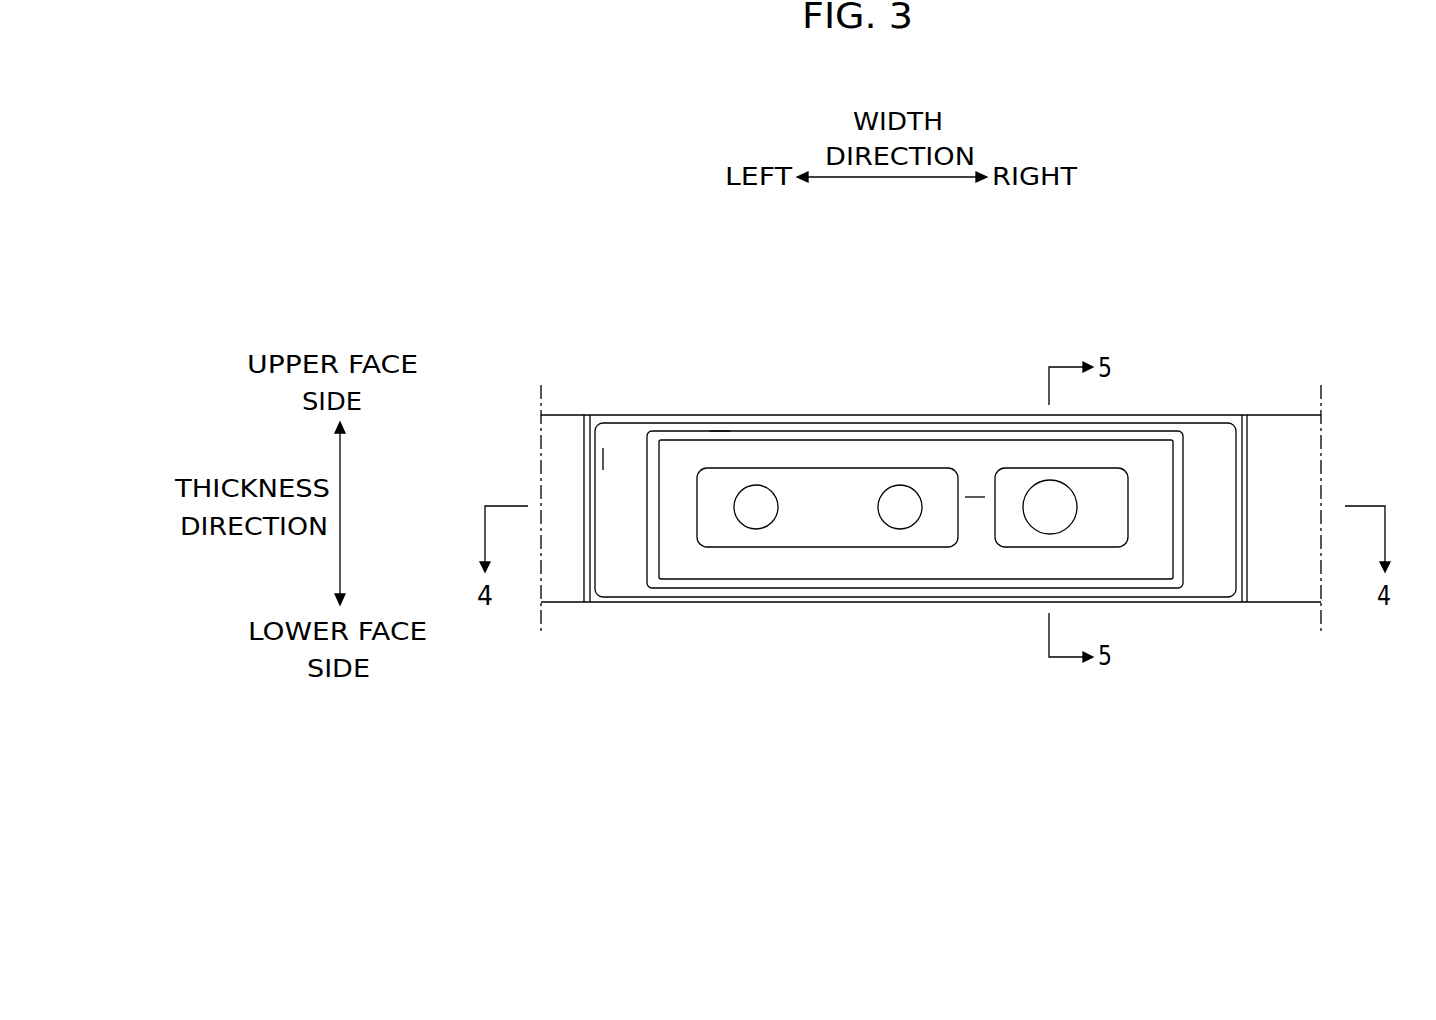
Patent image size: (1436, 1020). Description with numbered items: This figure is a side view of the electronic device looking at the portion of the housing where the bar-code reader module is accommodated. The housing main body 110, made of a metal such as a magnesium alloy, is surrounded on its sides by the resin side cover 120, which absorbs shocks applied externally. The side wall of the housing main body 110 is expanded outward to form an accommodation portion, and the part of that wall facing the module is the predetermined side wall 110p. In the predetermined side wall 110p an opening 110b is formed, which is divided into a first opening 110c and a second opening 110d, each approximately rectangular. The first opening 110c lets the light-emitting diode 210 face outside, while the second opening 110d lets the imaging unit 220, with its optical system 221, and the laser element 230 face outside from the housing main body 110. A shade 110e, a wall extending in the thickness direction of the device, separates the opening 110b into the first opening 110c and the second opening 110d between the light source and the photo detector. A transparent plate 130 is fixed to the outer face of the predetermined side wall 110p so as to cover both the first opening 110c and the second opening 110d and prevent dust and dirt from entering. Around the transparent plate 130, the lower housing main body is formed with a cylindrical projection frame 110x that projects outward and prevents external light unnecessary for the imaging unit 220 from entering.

The housing main body 110 is at (1207, 614).
The projection frame 110x is at (603, 465).
The predetermined side wall 110p is at (718, 447).
The shade 110e is at (975, 497).
The opening 110b is at (912, 411).
The second opening 110d is at (818, 473).
The first opening 110c is at (1020, 474).
The side cover 120 is at (1268, 580).
The transparent plate 130 is at (1145, 433).
The light-emitting diode 210 is at (1050, 507).
The imaging unit 220 is at (894, 572).
The optical system 221 is at (900, 510).
The laser element 230 is at (754, 510).